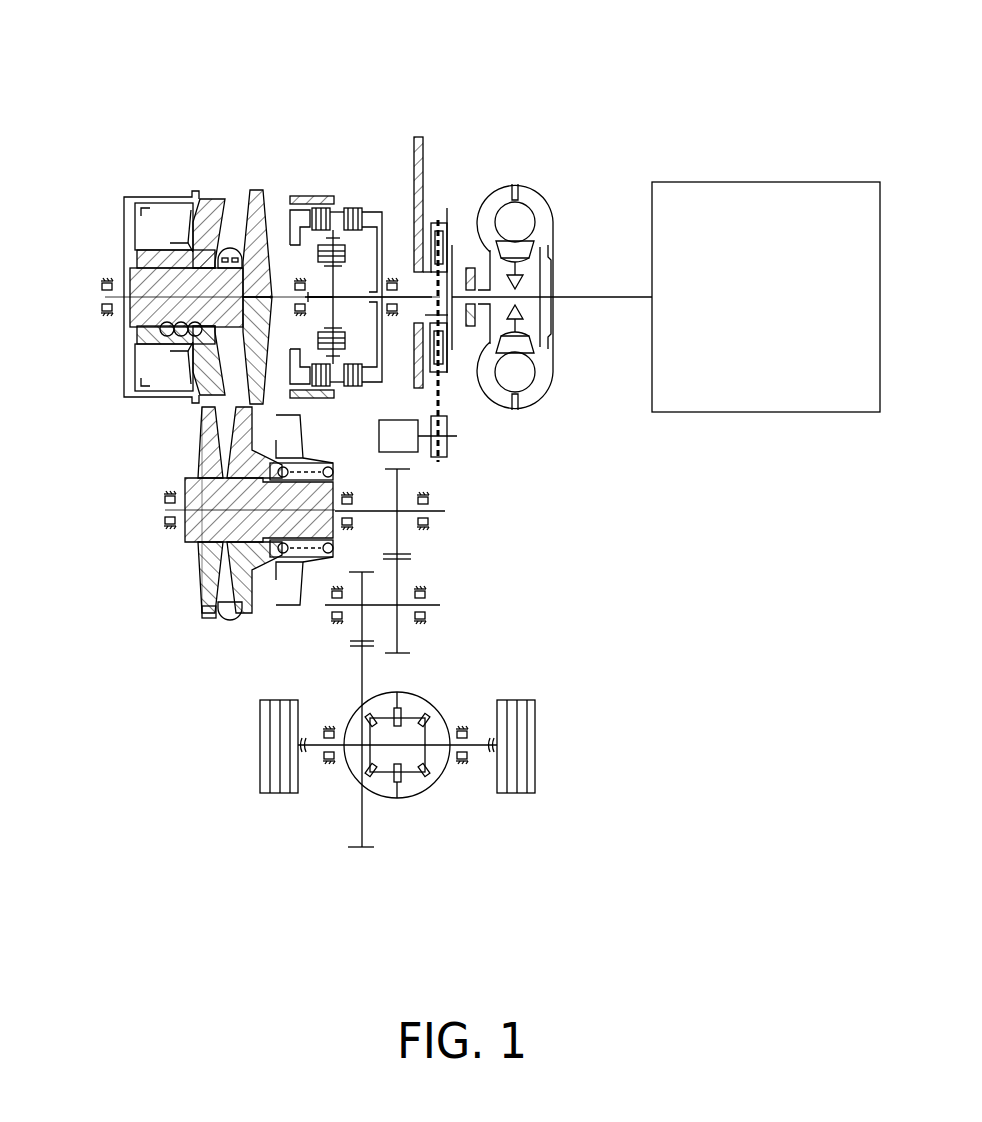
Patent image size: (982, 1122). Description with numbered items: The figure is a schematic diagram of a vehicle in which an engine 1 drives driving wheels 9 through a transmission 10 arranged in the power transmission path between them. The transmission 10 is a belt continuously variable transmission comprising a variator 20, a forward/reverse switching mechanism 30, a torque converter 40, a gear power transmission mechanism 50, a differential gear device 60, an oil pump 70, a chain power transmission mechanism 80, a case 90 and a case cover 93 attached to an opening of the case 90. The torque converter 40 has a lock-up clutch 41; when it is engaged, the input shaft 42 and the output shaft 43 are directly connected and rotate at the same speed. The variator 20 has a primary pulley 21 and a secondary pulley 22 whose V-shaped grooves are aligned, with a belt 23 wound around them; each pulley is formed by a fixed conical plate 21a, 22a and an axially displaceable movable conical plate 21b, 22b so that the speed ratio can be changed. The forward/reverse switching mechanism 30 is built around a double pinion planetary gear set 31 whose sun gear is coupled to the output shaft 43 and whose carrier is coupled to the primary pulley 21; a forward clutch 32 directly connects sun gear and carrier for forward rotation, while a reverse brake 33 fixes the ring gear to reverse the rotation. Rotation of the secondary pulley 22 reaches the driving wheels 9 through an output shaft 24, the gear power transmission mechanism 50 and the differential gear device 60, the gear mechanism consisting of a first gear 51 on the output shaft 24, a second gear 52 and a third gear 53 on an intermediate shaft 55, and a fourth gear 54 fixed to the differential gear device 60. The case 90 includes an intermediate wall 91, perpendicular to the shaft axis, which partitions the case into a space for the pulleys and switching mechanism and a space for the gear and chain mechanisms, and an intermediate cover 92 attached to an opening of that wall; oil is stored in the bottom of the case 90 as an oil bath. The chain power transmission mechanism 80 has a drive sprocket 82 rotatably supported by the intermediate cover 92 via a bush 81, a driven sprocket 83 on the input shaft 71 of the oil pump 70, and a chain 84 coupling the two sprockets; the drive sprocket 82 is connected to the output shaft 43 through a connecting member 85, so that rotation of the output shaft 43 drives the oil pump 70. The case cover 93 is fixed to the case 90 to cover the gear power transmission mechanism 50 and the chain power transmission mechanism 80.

The engine 1 is at (712, 182).
The driving wheels 9 is at (260, 740).
The transmission 10 is at (148, 86).
The variator 20 is at (107, 192).
The primary pulley 21 is at (250, 193).
The fixed conical plate 21a is at (259, 190).
The movable conical plate 21b is at (198, 190).
The secondary pulley 22 is at (293, 622).
The fixed conical plate 22a is at (203, 573).
The movable conical plate 22b is at (240, 620).
The belt 23 is at (230, 210).
The output shaft 24 is at (367, 505).
The forward/reverse switching mechanism 30 is at (327, 120).
The double pinion planetary gear set 31 is at (342, 206).
The forward clutch 32 is at (355, 208).
The reverse brake 33 is at (320, 206).
The torque converter 40 is at (500, 172).
The lock-up clutch 41 is at (555, 240).
The input shaft 42 is at (556, 300).
The output shaft 43 is at (450, 245).
The gear power transmission mechanism 50 is at (446, 572).
The first gear 51 is at (410, 555).
The second gear 52 is at (410, 645).
The third gear 53 is at (360, 570).
The fourth gear 54 is at (365, 850).
The intermediate shaft 55 is at (435, 605).
The differential gear device 60 is at (447, 697).
The oil pump 70 is at (379, 424).
The input shaft 71 is at (421, 440).
The chain power transmission mechanism 80 is at (467, 429).
The bush 81 is at (432, 326).
The drive sprocket 82 is at (448, 372).
The driven sprocket 83 is at (440, 457).
The chain 84 is at (447, 452).
The connecting member 85 is at (438, 316).
The case 90 is at (292, 196).
The intermediate wall 91 is at (414, 160).
The intermediate cover 92 is at (414, 210).
The case cover 93 is at (468, 266).